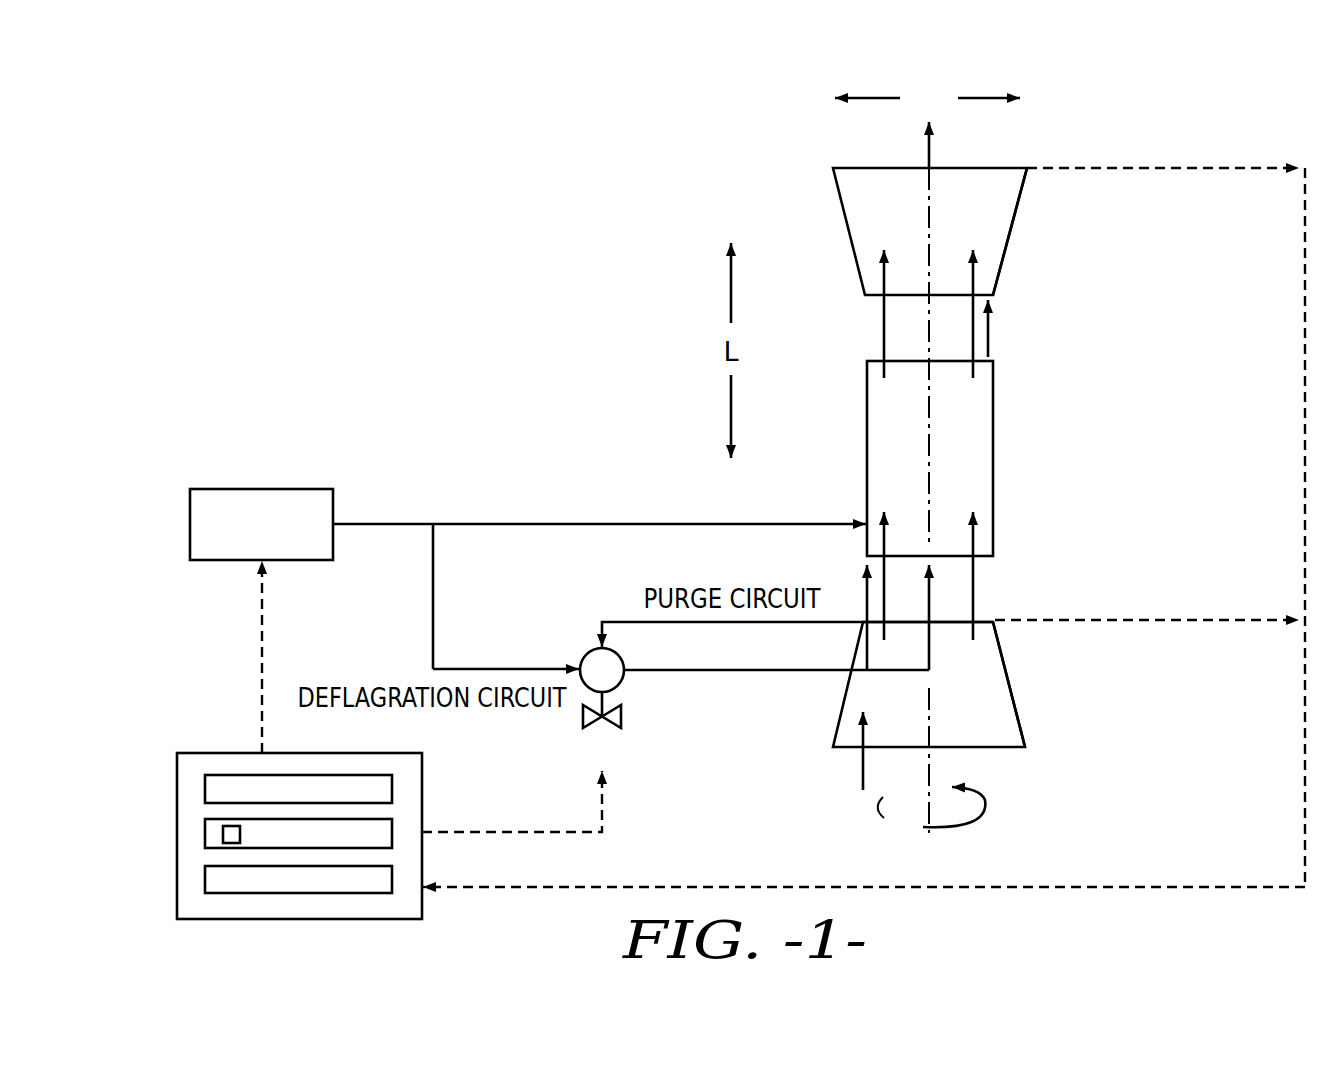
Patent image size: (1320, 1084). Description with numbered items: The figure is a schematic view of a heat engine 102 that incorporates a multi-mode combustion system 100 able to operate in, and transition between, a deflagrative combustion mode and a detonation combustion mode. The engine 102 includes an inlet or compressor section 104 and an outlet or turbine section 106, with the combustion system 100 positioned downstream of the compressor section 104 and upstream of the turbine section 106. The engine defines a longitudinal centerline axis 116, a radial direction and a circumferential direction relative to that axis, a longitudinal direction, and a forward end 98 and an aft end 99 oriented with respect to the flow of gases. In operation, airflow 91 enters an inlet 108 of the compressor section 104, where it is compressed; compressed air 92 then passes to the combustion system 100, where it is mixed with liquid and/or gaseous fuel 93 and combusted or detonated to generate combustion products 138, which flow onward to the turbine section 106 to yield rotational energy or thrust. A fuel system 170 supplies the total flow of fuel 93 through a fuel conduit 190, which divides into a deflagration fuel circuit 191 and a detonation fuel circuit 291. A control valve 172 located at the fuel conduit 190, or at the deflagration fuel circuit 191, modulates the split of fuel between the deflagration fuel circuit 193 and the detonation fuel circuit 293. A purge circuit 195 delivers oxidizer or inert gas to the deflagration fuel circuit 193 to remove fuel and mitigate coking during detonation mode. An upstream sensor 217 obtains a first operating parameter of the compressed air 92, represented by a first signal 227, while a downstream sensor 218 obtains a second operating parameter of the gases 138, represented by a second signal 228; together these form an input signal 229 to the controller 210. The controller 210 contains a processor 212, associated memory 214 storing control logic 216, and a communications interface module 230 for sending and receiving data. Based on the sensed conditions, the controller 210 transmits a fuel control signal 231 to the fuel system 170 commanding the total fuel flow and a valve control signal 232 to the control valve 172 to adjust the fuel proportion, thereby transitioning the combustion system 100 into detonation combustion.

The aft end 99 is at (946, 70).
The forward end 98 is at (946, 880).
The multi-mode combustion system 100 is at (978, 420).
The heat engine 102 is at (597, 211).
The compressor section 104 is at (1002, 737).
The turbine section 106 is at (990, 220).
The inlet 108 is at (994, 772).
The longitudinal centerline axis 116 is at (933, 830).
The combustion products 138 is at (882, 312).
The airflow 91 is at (862, 765).
The compressed air 92 is at (975, 585).
The fuel 93 is at (366, 523).
The fuel system 170 is at (250, 488).
The control valve 172 is at (622, 648).
The fuel conduit 190 is at (576, 471).
The deflagration fuel circuit 191 is at (433, 582).
The deflagration fuel circuit 193 is at (768, 673).
The purge circuit 195 is at (570, 565).
The controller 210 is at (310, 920).
The processor 212 is at (393, 788).
The memory 214 is at (223, 833).
The control logic 216 is at (205, 828).
The upstream sensor 217 is at (997, 618).
The downstream sensor 218 is at (1028, 172).
The first signal 227 is at (1128, 622).
The second signal 228 is at (1170, 172).
The input signal 229 is at (572, 890).
The communications interface module 230 is at (205, 886).
The fuel control signal 231 is at (262, 618).
The valve control signal 232 is at (483, 828).
The detonation fuel circuit 291 is at (463, 523).
The detonation fuel circuit 293 is at (785, 523).